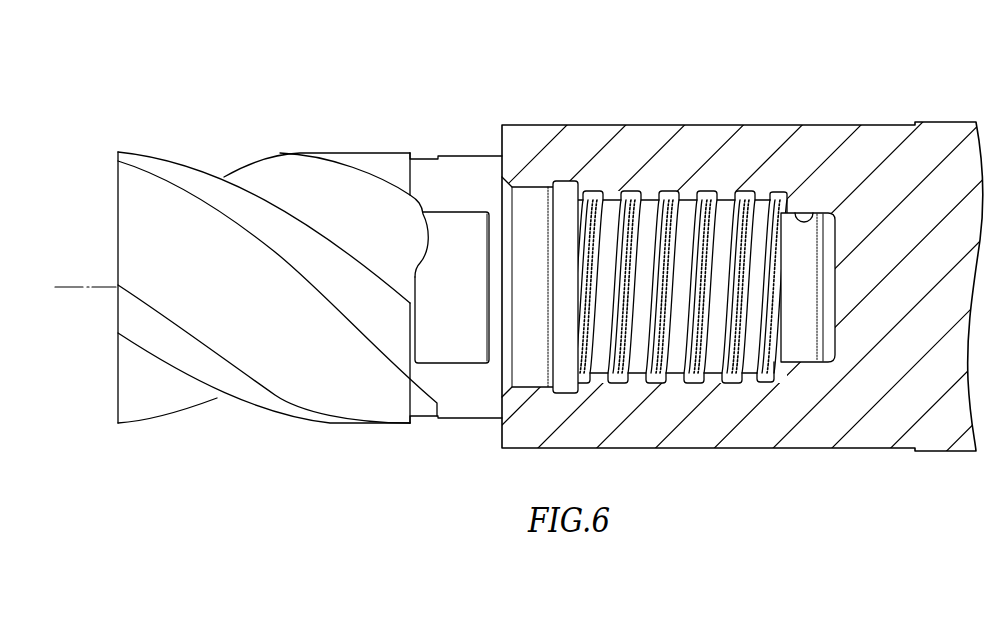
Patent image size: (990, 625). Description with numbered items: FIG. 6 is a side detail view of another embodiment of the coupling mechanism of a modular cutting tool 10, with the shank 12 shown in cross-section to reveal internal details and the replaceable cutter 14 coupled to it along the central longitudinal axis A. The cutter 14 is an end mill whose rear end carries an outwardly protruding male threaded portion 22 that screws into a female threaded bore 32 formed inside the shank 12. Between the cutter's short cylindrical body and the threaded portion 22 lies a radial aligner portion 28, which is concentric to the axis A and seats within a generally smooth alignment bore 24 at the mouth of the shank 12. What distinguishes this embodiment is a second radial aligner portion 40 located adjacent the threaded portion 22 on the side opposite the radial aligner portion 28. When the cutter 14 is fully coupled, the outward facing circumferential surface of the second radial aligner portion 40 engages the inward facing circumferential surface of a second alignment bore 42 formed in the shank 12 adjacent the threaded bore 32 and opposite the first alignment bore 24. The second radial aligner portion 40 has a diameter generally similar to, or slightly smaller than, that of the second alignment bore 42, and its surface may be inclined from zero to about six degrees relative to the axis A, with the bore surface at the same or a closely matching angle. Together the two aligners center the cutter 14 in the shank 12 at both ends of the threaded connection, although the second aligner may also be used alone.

The modular cutting tool 10 is at (812, 104).
The shank 12 is at (700, 125).
The cutter 14 is at (455, 156).
The male threaded portion 22 is at (678, 277).
The alignment bore 24 is at (531, 186).
The radial aligner portion 28 is at (533, 370).
The female threaded bore 32 is at (709, 191).
The second radial aligner portion 40 is at (803, 350).
The second alignment bore 42 is at (810, 212).
The central longitudinal axis A is at (95, 286).